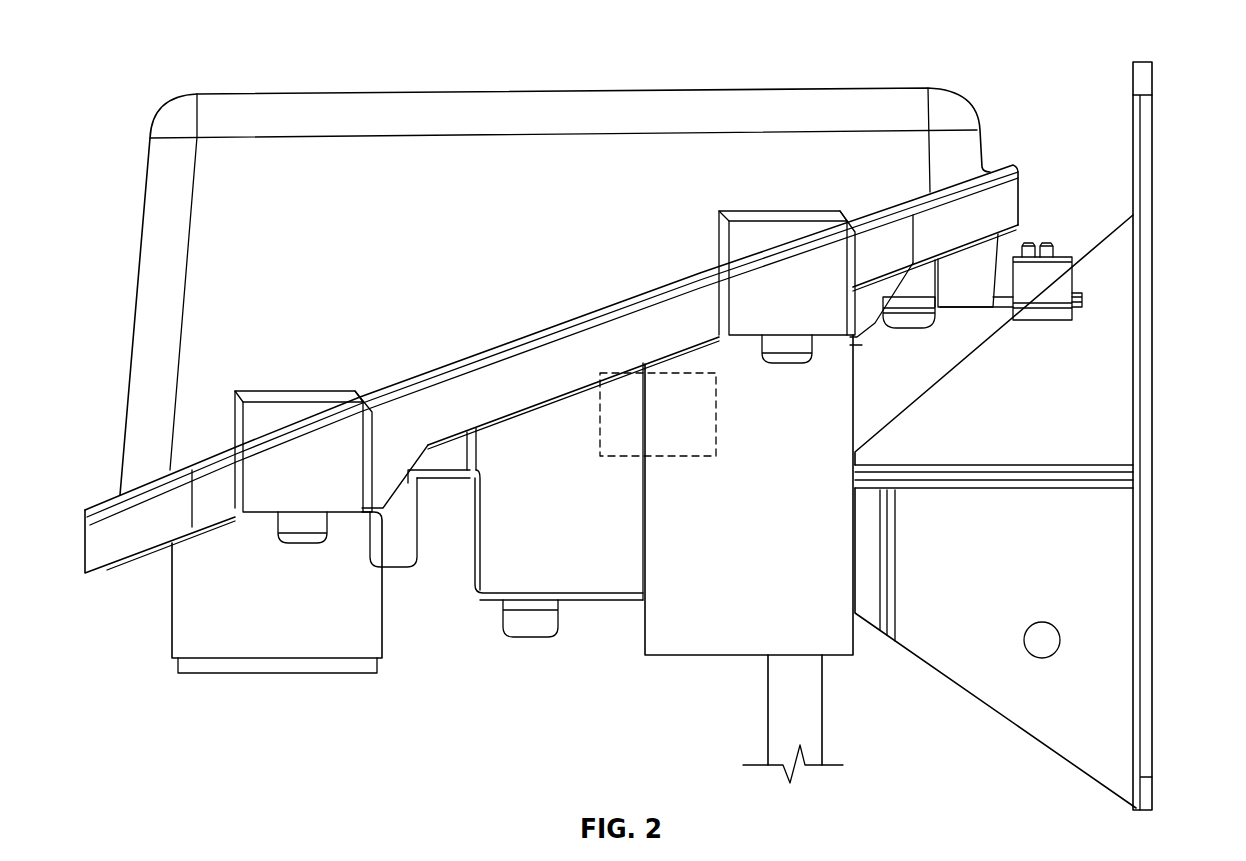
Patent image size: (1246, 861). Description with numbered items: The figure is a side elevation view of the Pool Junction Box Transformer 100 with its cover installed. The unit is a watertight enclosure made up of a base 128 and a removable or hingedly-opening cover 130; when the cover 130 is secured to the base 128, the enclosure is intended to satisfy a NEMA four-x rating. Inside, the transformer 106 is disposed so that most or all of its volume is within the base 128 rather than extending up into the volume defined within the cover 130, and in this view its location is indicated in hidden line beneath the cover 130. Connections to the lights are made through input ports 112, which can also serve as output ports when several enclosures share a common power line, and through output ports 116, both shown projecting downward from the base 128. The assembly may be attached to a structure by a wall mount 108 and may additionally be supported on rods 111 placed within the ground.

The Pool Junction Box Transformer (PJBX) 100 is at (120, 68).
The cover 130 is at (455, 240).
The transformer 106 is at (698, 430).
The base 128 is at (585, 548).
The output ports 116 is at (282, 587).
The input ports 112 is at (737, 583).
The rods 111 is at (802, 717).
The wall mount 108 is at (1078, 383).